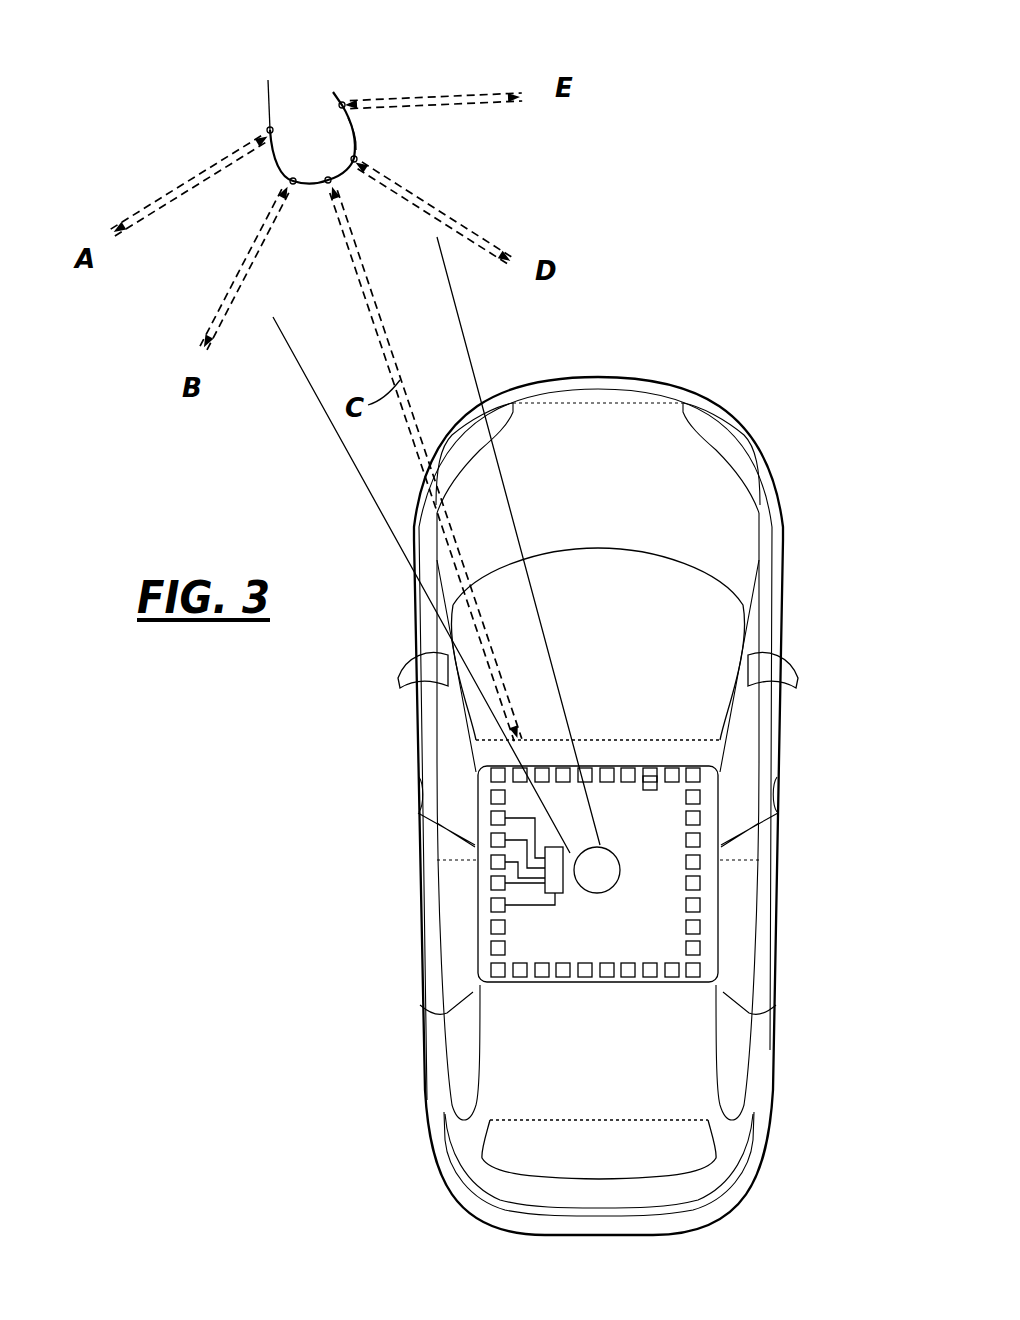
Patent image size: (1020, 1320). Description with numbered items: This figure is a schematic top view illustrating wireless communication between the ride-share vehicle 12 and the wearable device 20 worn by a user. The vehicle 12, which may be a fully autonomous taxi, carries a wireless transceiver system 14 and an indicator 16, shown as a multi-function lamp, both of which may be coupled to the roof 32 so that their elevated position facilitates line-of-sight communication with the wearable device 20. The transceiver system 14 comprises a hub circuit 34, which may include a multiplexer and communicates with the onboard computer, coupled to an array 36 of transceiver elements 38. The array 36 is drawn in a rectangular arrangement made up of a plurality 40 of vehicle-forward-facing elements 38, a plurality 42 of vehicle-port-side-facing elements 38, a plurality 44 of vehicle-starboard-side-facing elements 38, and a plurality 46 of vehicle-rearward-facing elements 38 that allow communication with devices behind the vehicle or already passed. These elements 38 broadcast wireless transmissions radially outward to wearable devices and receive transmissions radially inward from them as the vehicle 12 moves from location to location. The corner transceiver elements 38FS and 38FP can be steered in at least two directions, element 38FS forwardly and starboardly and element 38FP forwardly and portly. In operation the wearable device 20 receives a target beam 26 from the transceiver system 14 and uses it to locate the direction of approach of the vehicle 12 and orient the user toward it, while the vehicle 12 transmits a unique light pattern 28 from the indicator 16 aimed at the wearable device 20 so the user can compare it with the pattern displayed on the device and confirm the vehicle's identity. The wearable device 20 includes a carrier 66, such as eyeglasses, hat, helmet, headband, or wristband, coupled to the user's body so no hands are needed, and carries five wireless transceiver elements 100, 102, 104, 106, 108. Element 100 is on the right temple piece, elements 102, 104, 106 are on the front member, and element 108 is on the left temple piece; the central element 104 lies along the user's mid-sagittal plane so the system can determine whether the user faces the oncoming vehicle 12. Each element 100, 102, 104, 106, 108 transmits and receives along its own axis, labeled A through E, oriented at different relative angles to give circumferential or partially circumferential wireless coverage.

The vehicle 12 is at (704, 386).
The wireless transceiver system 14 is at (722, 760).
The indicator 16 is at (603, 873).
The wearable device 20 is at (362, 44).
The target beam 26 is at (400, 377).
The light pattern 28 is at (478, 370).
The roof 32 is at (512, 1050).
The hub circuit 34 is at (565, 893).
The array 36 is at (714, 790).
The transceiver elements 38 is at (686, 820).
The corner transceiver element 38FS is at (692, 765).
The corner transceiver element 38FP is at (490, 772).
The plurality of vehicle-forward-facing elements 40 is at (488, 757).
The plurality of vehicle-port-side-facing elements 42 is at (480, 772).
The plurality of vehicle-starboard-side-facing elements 44 is at (716, 772).
The plurality of vehicle-rearward-facing elements 46 is at (712, 986).
The carrier 66 is at (357, 137).
The wireless transceiver element 100 is at (268, 130).
The wireless transceiver element 102 is at (295, 184).
The central transceiver element 104 is at (332, 183).
The wireless transceiver element 106 is at (357, 160).
The wireless transceiver element 108 is at (343, 102).